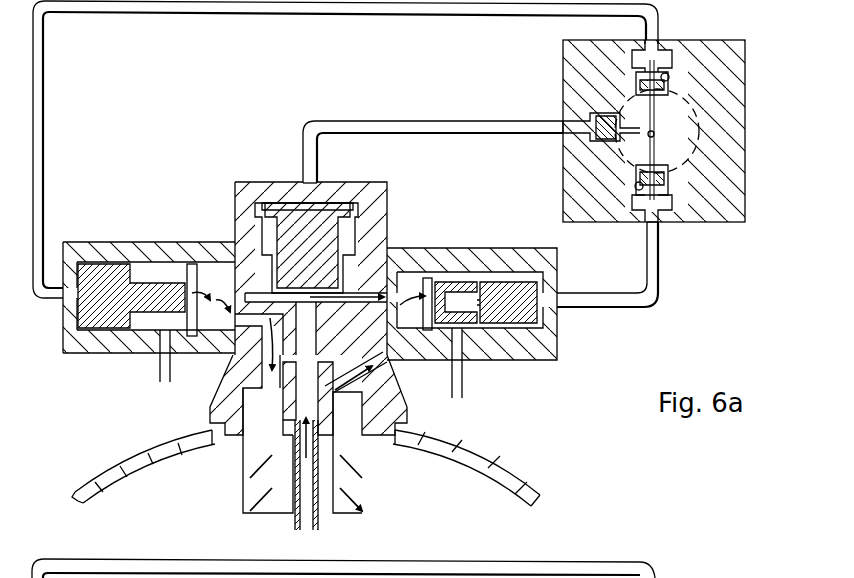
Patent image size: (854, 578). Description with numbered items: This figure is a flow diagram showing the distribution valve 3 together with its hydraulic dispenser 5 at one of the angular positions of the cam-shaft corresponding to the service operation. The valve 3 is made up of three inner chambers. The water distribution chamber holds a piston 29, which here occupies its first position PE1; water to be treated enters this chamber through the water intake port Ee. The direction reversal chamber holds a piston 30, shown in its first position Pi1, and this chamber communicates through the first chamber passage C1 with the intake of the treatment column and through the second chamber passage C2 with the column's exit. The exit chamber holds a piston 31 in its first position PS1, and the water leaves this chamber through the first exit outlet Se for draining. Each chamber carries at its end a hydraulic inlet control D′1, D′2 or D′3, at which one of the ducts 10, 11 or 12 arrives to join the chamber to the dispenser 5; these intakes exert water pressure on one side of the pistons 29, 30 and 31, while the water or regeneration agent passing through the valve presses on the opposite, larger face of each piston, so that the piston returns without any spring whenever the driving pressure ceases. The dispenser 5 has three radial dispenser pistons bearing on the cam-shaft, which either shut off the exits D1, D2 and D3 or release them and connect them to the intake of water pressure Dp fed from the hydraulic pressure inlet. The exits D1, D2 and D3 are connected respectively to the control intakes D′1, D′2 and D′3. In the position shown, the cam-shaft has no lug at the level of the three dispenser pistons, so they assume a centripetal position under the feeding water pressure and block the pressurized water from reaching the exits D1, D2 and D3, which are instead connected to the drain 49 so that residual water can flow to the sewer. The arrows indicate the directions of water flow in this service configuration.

The duct 10 is at (389, 15).
The duct 11 is at (412, 123).
The duct 12 is at (637, 301).
The valve 3 is at (313, 258).
The hydraulic dispenser 5 is at (642, 131).
The drain 49 is at (552, 84).
The piston 29 is at (108, 262).
The piston 30 is at (258, 223).
The piston 31 is at (525, 340).
The exit D1 is at (666, 30).
The exit D2 is at (545, 147).
The exit D3 is at (669, 240).
The intake of water pressure Dp is at (706, 99).
The hydraulic inlet control D′1 is at (45, 311).
The hydraulic inlet control D′2 is at (328, 172).
The hydraulic inlet control D′3 is at (572, 289).
The piston position PE1 is at (149, 292).
The piston position Pi1 is at (343, 241).
The piston position PS1 is at (472, 313).
The water intake port Ee is at (208, 300).
The first exit outlet Se is at (413, 304).
The first chamber passage C1 is at (310, 432).
The second chamber passage C2 is at (308, 446).